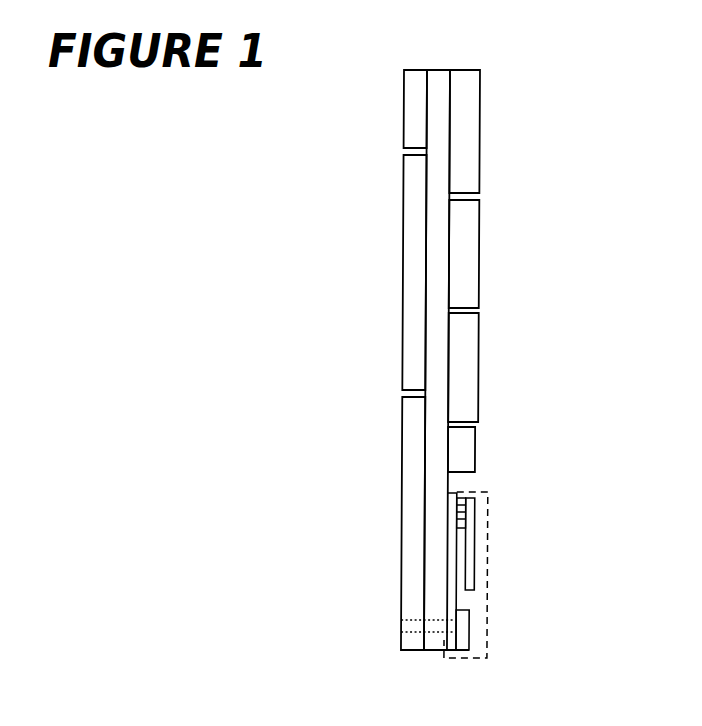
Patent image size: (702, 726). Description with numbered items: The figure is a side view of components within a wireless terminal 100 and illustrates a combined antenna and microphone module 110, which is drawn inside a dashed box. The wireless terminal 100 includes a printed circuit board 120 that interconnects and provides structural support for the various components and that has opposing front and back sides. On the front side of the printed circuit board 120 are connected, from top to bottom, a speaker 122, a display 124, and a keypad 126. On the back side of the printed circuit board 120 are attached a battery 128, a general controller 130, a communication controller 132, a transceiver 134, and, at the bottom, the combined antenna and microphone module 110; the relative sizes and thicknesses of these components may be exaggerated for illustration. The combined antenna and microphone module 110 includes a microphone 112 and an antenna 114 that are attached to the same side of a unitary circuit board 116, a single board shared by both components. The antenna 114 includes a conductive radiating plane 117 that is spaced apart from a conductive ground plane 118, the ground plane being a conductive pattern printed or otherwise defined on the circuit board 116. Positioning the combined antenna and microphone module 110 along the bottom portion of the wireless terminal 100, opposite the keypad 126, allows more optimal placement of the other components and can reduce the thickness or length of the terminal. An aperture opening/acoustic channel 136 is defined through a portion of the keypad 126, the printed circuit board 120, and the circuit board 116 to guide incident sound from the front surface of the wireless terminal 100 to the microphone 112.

The wireless terminal 100 is at (252, 320).
The combined antenna and microphone module 110 is at (491, 553).
The microphone 112 is at (470, 633).
The antenna 114 is at (478, 528).
The unitary circuit board 116 is at (456, 500).
The conductive radiating plane 117 is at (482, 581).
The conductive ground plane 118 is at (466, 601).
The printed circuit board 120 is at (438, 77).
The speaker 122 is at (404, 115).
The display 124 is at (404, 270).
The keypad 126 is at (403, 530).
The battery 128 is at (481, 105).
The general controller 130 is at (481, 243).
The communication controller 132 is at (481, 363).
The transceiver 134 is at (478, 443).
The aperture opening/acoustic channel 136 is at (402, 632).